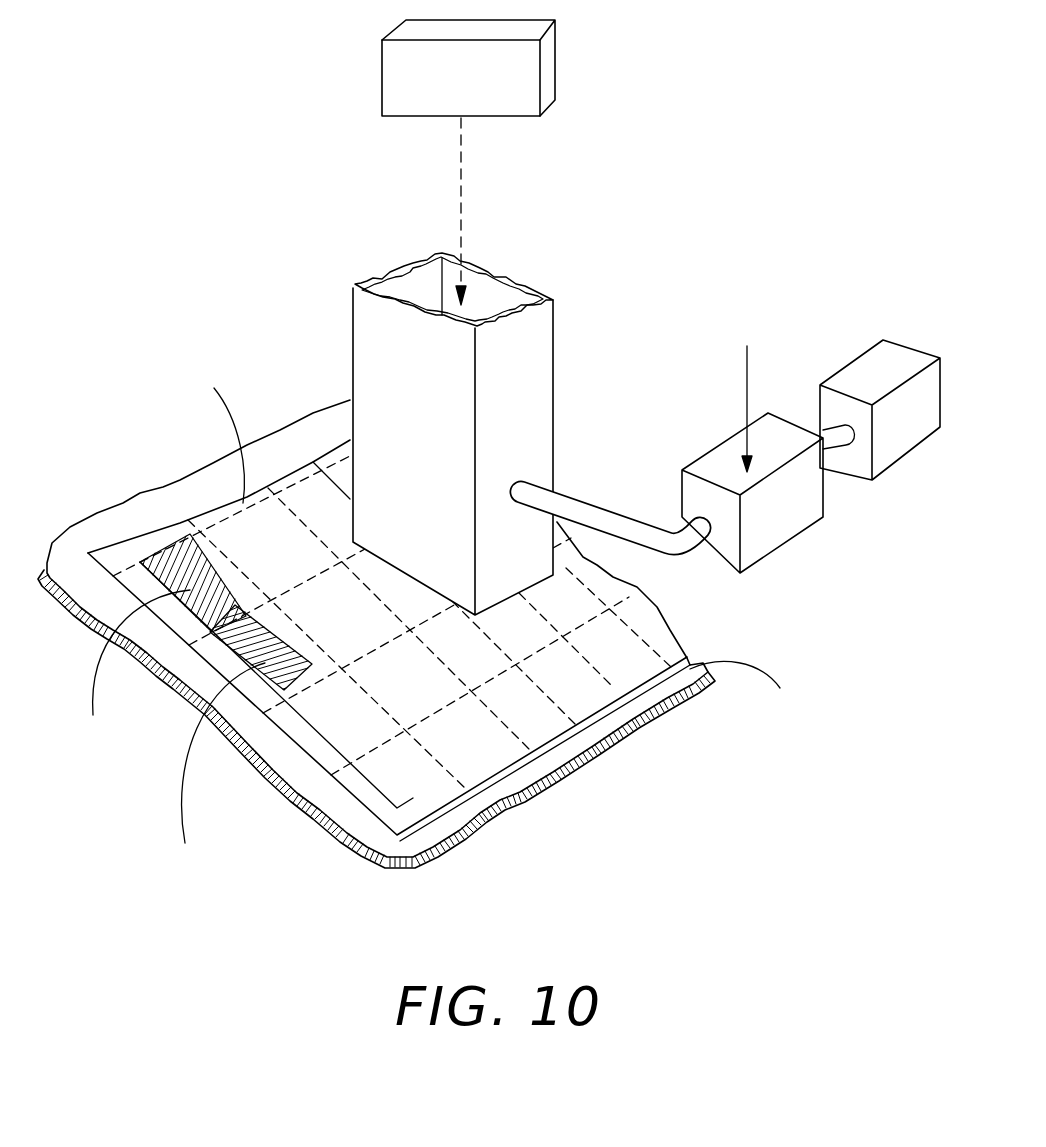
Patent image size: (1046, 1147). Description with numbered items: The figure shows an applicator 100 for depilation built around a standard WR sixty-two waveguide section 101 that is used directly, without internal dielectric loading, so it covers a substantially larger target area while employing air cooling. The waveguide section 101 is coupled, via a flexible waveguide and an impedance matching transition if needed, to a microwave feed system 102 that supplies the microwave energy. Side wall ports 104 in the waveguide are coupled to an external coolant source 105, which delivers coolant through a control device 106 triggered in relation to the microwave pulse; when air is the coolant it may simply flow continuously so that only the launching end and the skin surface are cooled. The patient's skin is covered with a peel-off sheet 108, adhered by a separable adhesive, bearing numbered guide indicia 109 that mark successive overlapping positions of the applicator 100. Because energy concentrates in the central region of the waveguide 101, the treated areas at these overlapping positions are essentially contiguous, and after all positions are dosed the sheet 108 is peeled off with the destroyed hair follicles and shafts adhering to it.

The applicator 100 is at (668, 283).
The waveguide section 101 is at (553, 367).
The microwave feed system 102 is at (555, 65).
The side wall ports 104 is at (519, 482).
The coolant source 105 is at (907, 455).
The control device 106 is at (803, 533).
The sheet 108 is at (620, 690).
The numbered guide indicia 109 is at (296, 718).